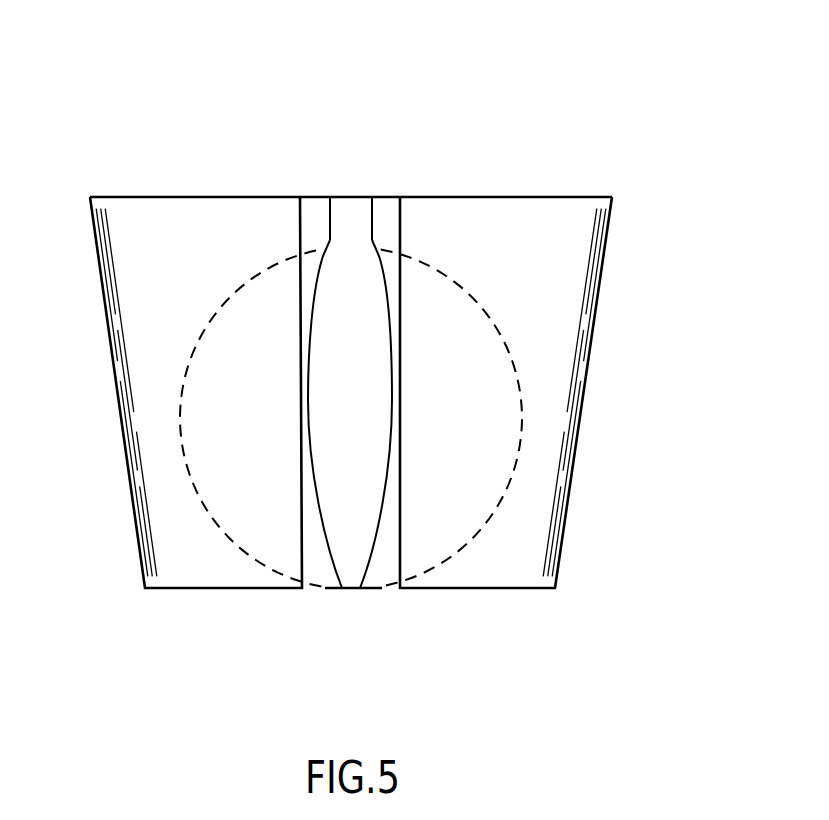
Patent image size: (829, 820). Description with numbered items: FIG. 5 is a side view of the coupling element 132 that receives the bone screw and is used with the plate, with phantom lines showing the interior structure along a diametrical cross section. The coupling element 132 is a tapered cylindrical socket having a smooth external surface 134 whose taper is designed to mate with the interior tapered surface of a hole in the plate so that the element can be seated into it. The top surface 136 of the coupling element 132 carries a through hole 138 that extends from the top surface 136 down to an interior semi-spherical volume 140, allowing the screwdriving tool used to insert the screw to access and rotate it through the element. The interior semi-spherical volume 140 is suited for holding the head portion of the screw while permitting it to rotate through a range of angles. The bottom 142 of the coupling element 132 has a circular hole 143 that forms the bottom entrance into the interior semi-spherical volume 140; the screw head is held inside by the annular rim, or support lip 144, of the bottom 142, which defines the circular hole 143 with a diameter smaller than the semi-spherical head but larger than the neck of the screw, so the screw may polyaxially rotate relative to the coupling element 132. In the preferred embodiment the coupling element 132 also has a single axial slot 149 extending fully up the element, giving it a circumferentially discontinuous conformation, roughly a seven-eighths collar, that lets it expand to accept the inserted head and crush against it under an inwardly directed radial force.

The coupling element 132 is at (364, 367).
The external surface 134 is at (580, 432).
The top surface 136 is at (213, 197).
The through hole 138 is at (352, 202).
The interior semi-spherical volume 140 is at (268, 438).
The bottom 142 is at (546, 449).
The circular hole 143 is at (350, 588).
The annular support lip 144 is at (283, 588).
The axial slot 149 is at (495, 339).